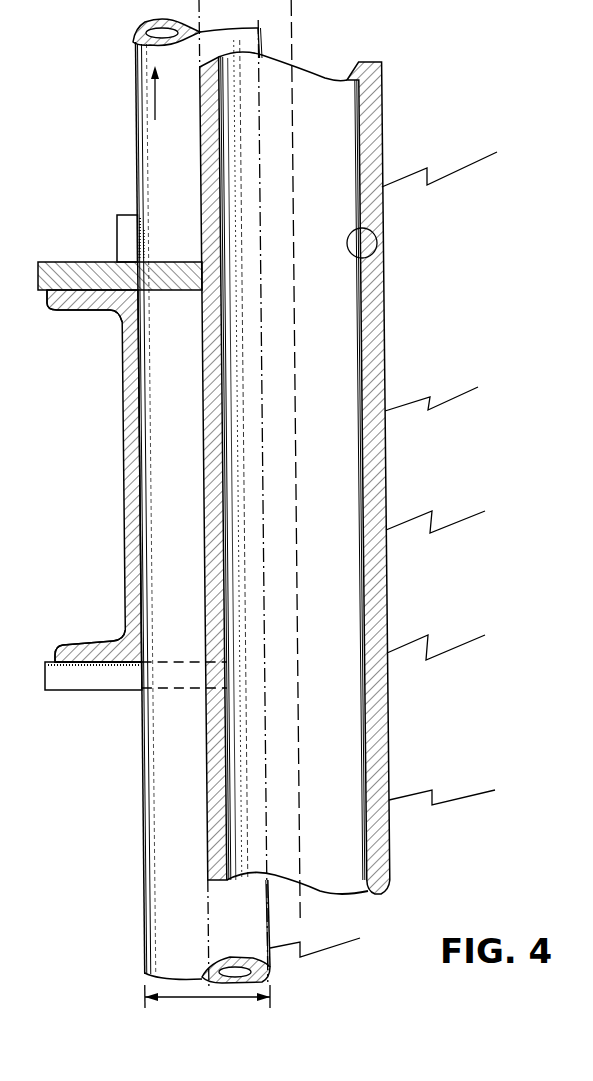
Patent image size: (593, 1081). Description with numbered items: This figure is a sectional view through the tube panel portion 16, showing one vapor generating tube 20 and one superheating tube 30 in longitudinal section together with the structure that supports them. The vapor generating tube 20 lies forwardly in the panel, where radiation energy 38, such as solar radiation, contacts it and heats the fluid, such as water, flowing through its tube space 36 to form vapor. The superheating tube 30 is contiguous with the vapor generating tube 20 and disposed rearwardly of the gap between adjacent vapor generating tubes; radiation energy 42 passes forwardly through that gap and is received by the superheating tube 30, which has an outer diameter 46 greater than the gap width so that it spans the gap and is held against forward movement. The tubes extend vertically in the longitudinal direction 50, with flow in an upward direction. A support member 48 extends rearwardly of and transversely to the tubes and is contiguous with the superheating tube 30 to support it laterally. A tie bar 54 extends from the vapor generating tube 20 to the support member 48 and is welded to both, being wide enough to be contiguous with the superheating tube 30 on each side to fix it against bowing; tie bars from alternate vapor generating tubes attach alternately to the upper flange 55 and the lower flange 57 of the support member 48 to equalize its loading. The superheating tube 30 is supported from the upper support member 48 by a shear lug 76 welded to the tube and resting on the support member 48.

The tube panel portion 16 is at (433, 97).
The vapor generating tube 20 is at (386, 326).
The superheating tube 30 is at (143, 832).
The tube space 36 is at (378, 253).
The radiation energy 38 is at (443, 806).
The radiation energy 42 is at (325, 946).
The outer diameter 46 is at (235, 999).
The support member 48 is at (124, 378).
The longitudinal direction 50 is at (156, 98).
The tie bar 54 is at (85, 262).
The upper flange 55 is at (64, 309).
The lower flange 57 is at (78, 645).
The shear lug 76 is at (117, 215).